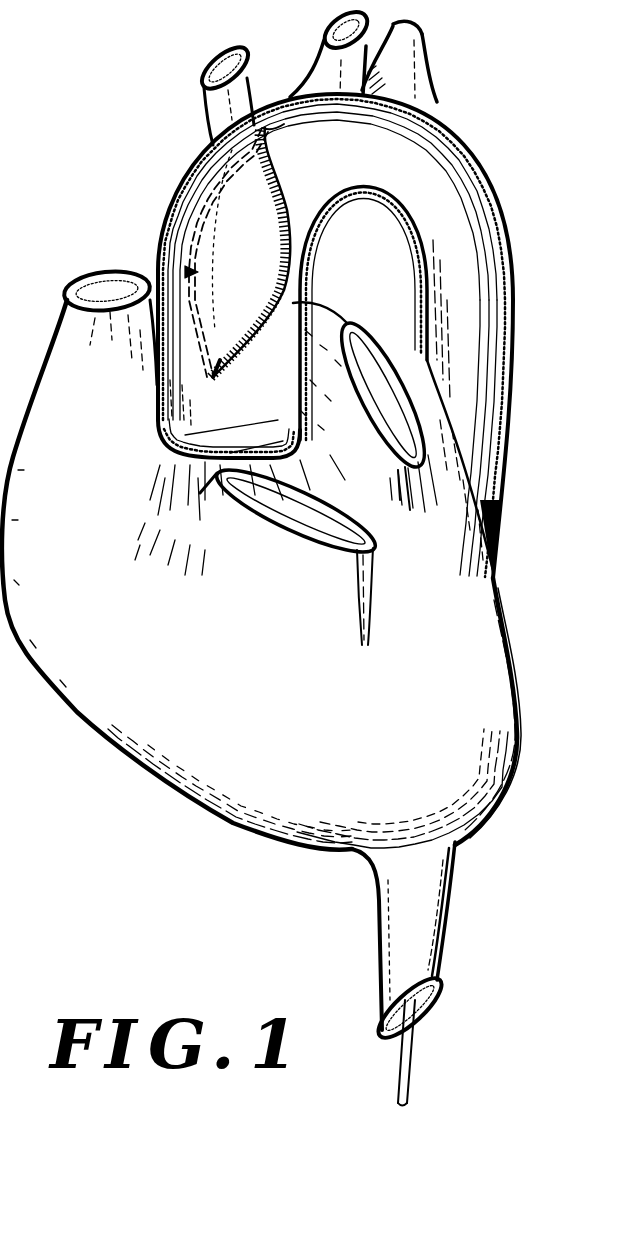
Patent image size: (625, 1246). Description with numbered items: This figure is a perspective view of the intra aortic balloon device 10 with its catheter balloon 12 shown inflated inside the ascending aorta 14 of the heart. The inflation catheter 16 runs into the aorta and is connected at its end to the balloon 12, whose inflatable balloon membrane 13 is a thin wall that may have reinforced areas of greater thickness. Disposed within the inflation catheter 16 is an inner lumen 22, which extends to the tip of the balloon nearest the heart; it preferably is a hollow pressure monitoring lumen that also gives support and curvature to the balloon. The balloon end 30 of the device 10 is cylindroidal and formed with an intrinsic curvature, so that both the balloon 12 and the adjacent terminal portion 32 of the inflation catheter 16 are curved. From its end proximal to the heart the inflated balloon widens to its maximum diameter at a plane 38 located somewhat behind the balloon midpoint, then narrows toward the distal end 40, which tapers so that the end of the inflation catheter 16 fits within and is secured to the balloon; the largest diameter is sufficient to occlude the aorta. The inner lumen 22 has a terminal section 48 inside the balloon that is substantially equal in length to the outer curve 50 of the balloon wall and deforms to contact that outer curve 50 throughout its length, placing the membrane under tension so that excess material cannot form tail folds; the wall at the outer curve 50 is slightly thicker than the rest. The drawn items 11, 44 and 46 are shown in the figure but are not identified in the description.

The intra aortic balloon device 10 is at (423, 1067).
The heart 11 is at (152, 585).
The catheter balloon 12 is at (193, 243).
The balloon membrane 13 is at (277, 177).
The ascending aorta 14 is at (150, 317).
The inflation catheter 16 is at (487, 372).
The inner lumen 22 is at (210, 142).
The balloon end 30 is at (283, 123).
The terminal portion of inflation catheter 32 is at (437, 150).
The plane of maximum diameter 38 is at (287, 247).
The distal end of balloon 40 is at (273, 150).
The pulmonary artery and valve openings 44 is at (256, 412).
The aortic lumen 46 is at (366, 158).
The terminal section of inner lumen 48 is at (185, 272).
The outer curve of balloon wall 50 is at (243, 110).